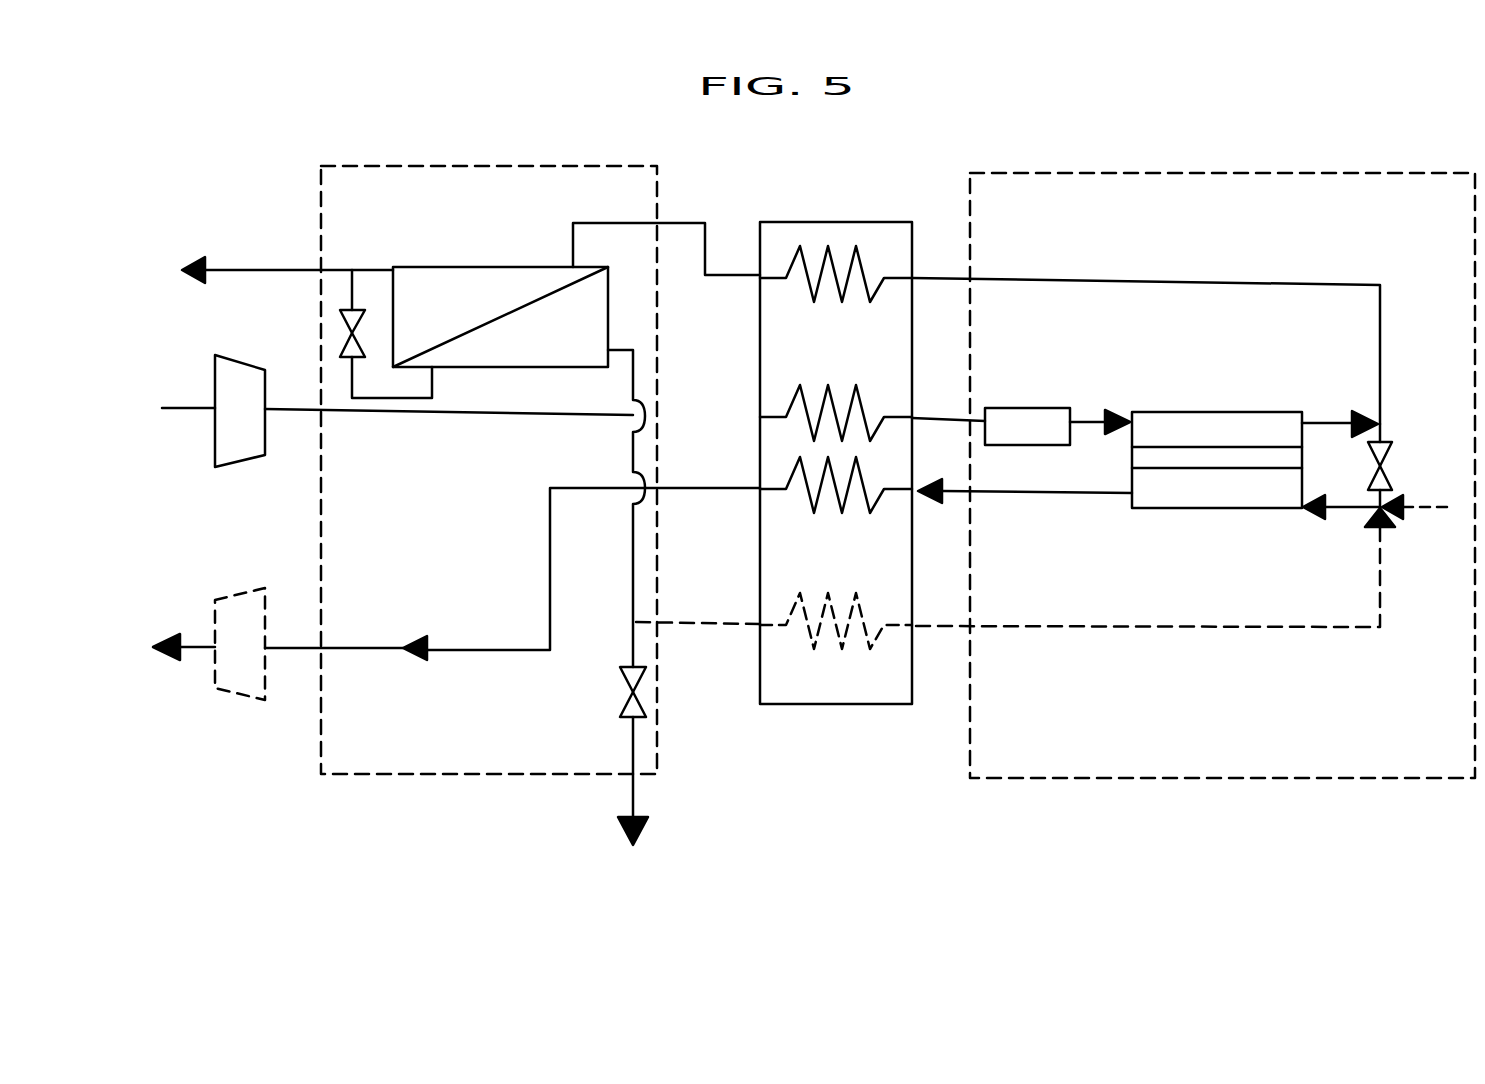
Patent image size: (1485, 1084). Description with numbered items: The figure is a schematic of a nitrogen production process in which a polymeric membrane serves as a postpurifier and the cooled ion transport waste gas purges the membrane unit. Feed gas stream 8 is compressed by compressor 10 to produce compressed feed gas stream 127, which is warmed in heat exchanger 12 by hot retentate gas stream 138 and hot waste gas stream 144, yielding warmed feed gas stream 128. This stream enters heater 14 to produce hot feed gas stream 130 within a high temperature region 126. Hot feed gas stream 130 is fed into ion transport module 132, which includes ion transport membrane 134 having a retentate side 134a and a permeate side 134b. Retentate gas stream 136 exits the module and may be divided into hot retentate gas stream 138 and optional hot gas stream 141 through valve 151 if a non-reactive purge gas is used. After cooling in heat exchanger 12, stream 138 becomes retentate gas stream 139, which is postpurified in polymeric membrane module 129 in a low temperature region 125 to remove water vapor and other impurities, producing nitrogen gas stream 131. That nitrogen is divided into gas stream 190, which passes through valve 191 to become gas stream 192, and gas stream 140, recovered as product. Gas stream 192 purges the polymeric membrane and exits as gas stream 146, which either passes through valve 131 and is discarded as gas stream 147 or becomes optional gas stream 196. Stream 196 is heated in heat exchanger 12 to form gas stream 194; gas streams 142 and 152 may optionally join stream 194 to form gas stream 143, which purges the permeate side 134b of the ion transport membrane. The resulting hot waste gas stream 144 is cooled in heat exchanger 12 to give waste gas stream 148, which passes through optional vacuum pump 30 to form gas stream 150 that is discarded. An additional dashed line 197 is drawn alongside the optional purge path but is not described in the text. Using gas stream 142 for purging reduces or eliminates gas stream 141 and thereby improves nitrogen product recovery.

The feed gas stream 8 is at (187, 410).
The compressor 10 is at (250, 458).
The heat exchanger 12 is at (855, 706).
The heater 14 is at (1010, 446).
The vacuum pump 30 is at (264, 702).
The low temperature region 125 is at (588, 778).
The high temperature region 126 is at (1290, 782).
The compressed feed gas stream 127 is at (415, 412).
The warmed feed gas stream 128 is at (945, 410).
The polymeric membrane module 129 is at (448, 266).
The hot feed gas stream 130 is at (1088, 420).
The nitrogen gas stream / valve 131 is at (368, 268).
The ion transport module 132 is at (1188, 412).
The ion transport membrane 134 is at (1128, 456).
The retentate side 134a is at (1253, 447).
The permeate side 134b is at (1215, 470).
The retentate gas stream 136 is at (1327, 422).
The hot retentate gas stream 138 is at (1200, 280).
The retentate gas stream 139 is at (680, 228).
The gas stream 140 is at (290, 268).
The hot gas stream 141 is at (1383, 434).
The gas stream 142 is at (1428, 522).
The gas stream 143 is at (1345, 509).
The hot waste gas stream 144 is at (1085, 496).
The gas stream 146 is at (630, 452).
The gas stream 147 is at (636, 787).
The waste gas stream 148 is at (478, 648).
The gas stream 150 is at (190, 645).
The valve 151 is at (1390, 452).
The gas stream 152 is at (1390, 498).
The gas stream 190 is at (345, 287).
The valve 191 is at (340, 320).
The gas stream 192 is at (352, 385).
The gas stream 194 is at (1318, 630).
The gas stream 196 is at (742, 640).
The optional conduit 197 is at (723, 617).